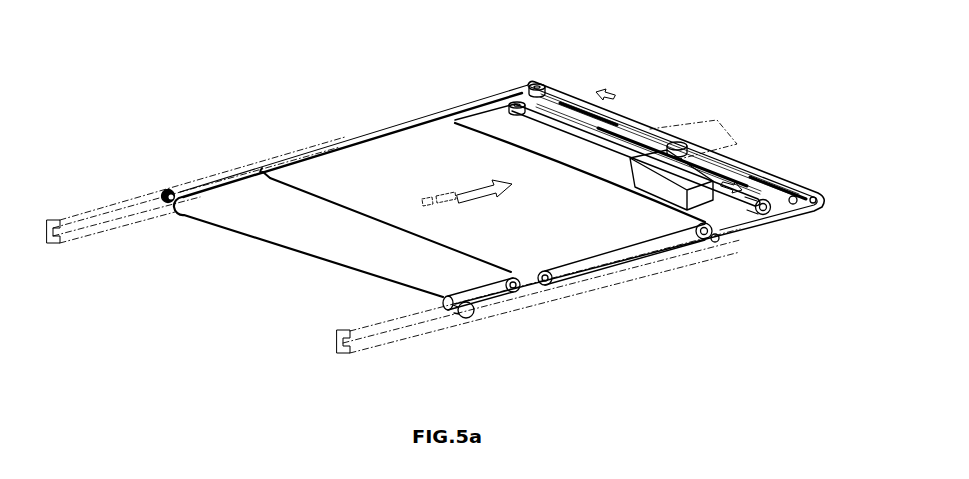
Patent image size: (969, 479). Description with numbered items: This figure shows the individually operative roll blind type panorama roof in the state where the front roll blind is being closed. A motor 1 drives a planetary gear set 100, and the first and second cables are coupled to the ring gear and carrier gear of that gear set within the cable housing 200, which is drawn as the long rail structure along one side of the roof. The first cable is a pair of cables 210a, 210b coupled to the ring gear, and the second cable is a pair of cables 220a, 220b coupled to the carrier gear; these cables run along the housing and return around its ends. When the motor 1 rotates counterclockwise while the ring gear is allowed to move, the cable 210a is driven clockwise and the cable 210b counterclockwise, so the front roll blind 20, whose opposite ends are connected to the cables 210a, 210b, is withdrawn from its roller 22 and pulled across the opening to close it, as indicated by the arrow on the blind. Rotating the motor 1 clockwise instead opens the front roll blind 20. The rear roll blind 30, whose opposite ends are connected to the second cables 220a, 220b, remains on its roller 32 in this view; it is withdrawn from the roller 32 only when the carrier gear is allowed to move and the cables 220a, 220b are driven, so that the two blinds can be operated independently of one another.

The motor 1 is at (674, 150).
The front roll blind 20 is at (583, 236).
The roller 22 is at (553, 293).
The rear roll blind 30 is at (323, 242).
The roller 32 is at (500, 298).
The planetary gear set 100 is at (640, 182).
The cable housing 200 is at (713, 140).
The cable of the first cable 210a is at (499, 94).
The cable of the first cable 210b is at (787, 216).
The cable of the second cable 220a is at (560, 88).
The cable of the second cable 220b is at (757, 168).